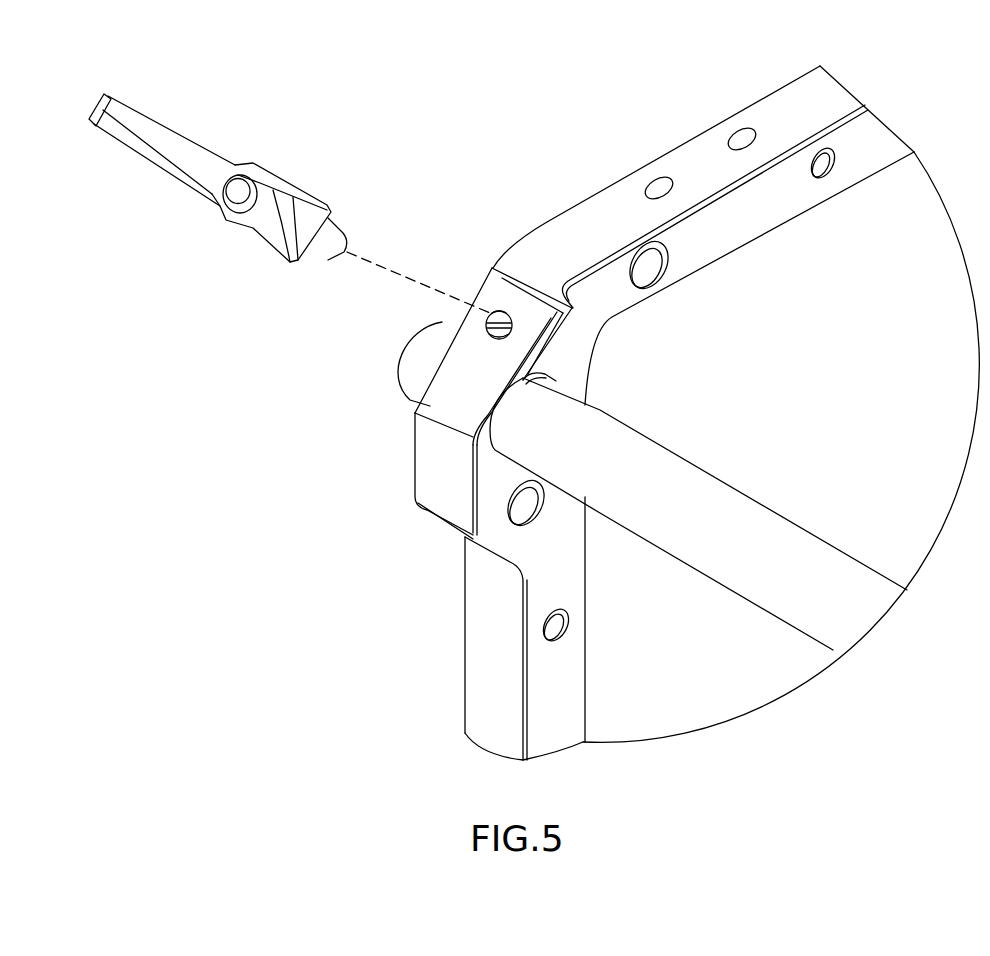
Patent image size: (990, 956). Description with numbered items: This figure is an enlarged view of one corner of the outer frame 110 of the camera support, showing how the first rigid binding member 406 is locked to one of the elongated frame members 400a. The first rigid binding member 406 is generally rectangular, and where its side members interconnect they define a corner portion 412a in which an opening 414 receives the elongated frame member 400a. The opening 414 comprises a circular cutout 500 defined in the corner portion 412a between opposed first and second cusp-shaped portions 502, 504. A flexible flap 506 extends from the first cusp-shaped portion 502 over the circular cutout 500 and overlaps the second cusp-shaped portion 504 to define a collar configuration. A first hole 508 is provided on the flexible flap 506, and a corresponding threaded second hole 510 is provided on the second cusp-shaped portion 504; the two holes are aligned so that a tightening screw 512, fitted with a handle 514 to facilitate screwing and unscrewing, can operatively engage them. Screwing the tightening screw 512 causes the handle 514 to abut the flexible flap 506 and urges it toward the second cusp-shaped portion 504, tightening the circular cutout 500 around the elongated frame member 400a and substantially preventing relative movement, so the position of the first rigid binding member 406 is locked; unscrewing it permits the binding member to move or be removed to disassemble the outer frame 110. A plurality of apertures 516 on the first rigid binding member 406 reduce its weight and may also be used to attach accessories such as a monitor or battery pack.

The outer frame 110 is at (514, 98).
The first rigid binding member 406 is at (800, 232).
The apertures 516 is at (817, 153).
The elongated frame member 400a is at (763, 533).
The corner portion 412a is at (423, 478).
The opening 414 is at (500, 472).
The first cusp-shaped portion 502 is at (488, 447).
The flexible flap 506 is at (453, 397).
The second cusp-shaped portion 504 is at (554, 356).
The circular cutout 500 is at (555, 380).
The first hole 508 is at (490, 313).
The threaded second hole 510 is at (500, 318).
The tightening screw 512 is at (333, 198).
The handle 514 is at (287, 261).